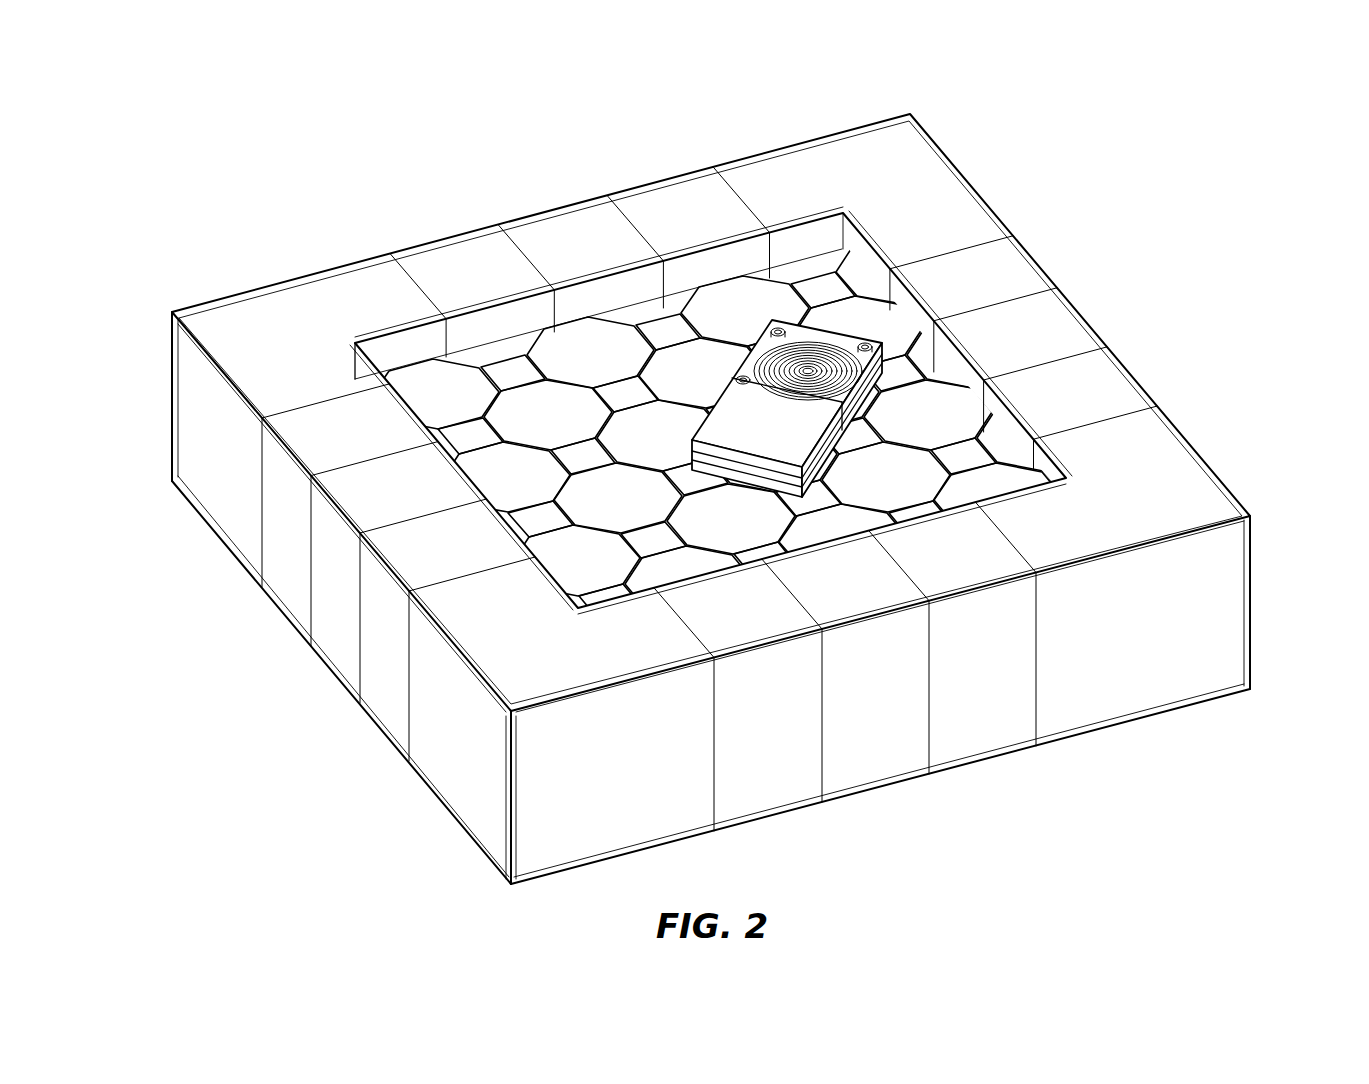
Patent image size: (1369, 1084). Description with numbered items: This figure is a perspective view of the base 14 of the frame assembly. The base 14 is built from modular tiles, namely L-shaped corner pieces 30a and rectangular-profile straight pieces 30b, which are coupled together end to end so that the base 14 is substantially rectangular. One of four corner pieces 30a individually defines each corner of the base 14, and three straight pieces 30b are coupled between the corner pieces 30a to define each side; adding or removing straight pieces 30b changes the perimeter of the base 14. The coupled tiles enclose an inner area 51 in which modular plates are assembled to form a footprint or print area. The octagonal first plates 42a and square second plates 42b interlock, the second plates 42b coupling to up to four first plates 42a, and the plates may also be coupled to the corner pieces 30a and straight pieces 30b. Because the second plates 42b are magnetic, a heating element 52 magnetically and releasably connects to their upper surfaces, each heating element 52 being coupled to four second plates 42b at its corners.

The base 14 is at (265, 110).
The corner pieces 30a is at (922, 178).
The straight pieces 30b is at (480, 253).
The first plates 42a is at (513, 423).
The second plates 42b is at (905, 510).
The inner area 51 is at (808, 258).
The heating element 52 is at (808, 366).